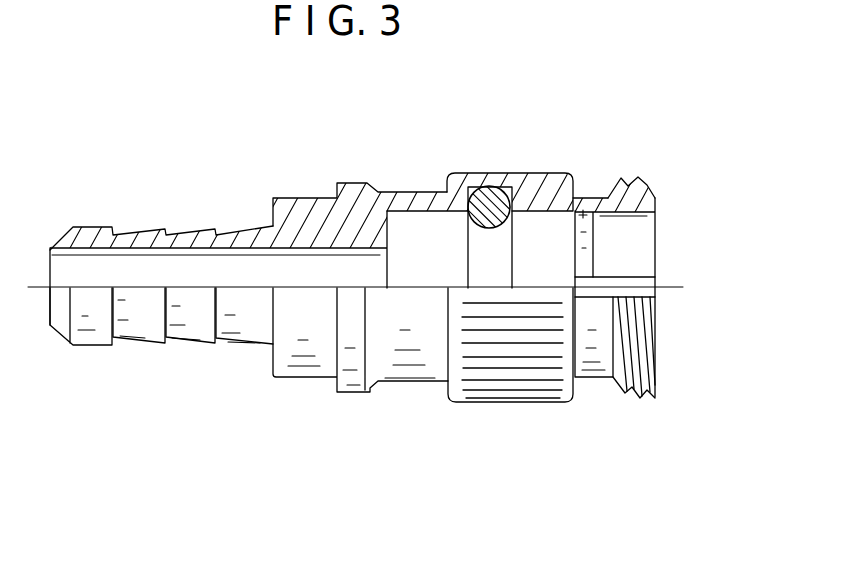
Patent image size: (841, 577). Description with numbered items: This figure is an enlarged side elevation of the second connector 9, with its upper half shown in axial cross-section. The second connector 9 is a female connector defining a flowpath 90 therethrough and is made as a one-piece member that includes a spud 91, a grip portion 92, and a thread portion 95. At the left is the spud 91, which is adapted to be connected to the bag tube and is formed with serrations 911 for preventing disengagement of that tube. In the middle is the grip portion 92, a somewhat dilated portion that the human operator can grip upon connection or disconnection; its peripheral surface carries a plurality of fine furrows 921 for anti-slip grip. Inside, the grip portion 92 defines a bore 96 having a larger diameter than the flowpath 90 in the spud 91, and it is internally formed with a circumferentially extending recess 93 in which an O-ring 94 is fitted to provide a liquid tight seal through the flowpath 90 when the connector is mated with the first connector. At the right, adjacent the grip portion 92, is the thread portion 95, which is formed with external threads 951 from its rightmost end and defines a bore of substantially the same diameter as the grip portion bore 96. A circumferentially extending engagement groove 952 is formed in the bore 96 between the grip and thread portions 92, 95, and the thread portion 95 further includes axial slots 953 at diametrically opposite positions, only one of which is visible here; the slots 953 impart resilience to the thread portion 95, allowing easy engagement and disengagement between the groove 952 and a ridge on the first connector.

The second connector 9 is at (513, 88).
The flowpath 90 is at (298, 265).
The spud 91 is at (275, 388).
The serrations 911 is at (165, 233).
The grip portion 92 is at (567, 420).
The fine furrows 921 is at (483, 375).
The recess 93 is at (476, 198).
The O-ring 94 is at (492, 200).
The thread portion 95 is at (655, 420).
The external threads 951 is at (633, 179).
The engagement groove 952 is at (583, 208).
The axial slots 953 is at (635, 292).
The bore 96 is at (457, 245).